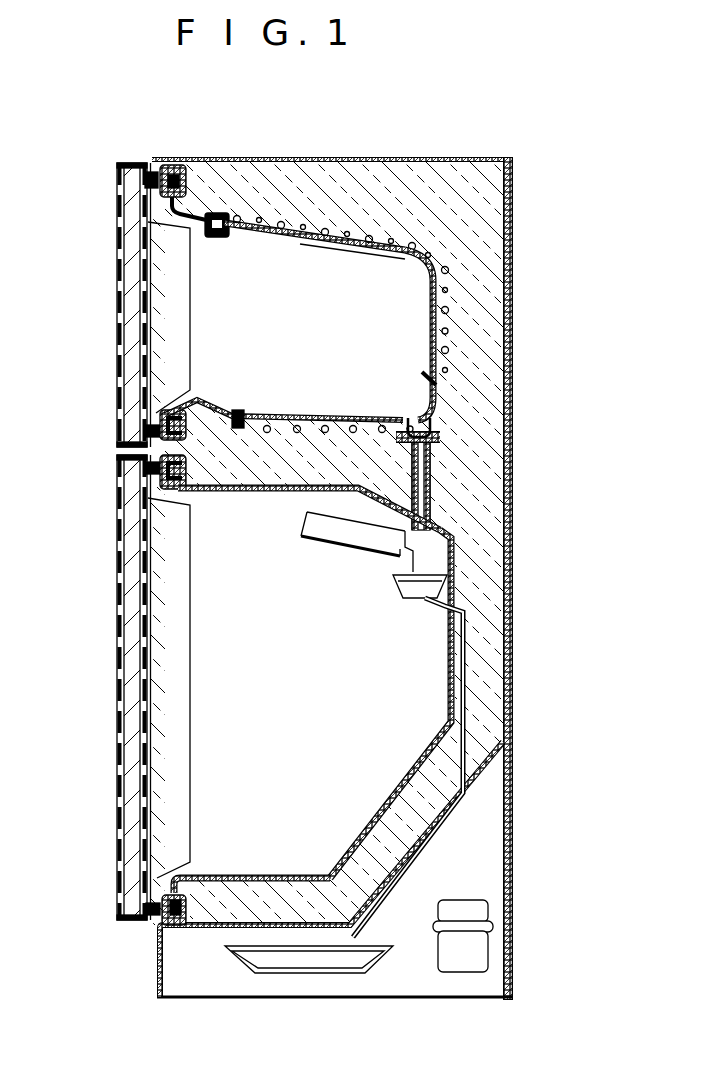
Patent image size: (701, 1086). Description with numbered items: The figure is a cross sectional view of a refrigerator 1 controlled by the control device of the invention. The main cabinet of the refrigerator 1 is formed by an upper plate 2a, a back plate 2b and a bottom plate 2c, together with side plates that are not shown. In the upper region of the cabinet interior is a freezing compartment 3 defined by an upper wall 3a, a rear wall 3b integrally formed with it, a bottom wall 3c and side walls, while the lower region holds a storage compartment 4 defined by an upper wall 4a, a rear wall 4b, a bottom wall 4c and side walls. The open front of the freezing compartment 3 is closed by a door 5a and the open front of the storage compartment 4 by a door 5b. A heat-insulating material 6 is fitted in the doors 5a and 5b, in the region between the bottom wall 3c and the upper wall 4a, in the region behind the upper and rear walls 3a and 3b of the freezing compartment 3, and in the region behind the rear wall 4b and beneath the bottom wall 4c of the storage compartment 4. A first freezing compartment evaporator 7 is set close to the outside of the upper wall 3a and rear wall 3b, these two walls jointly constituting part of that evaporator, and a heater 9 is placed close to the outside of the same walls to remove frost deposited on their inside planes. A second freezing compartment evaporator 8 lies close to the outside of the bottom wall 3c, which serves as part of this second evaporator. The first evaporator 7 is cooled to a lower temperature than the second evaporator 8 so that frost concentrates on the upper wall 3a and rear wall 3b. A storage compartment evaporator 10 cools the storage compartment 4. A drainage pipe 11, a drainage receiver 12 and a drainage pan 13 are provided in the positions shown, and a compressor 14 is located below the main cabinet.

The refrigerator 1 is at (327, 556).
The upper plate 2a is at (318, 157).
The back plate 2b is at (512, 350).
The bottom plate 2c is at (194, 930).
The freezing compartment 3 is at (304, 302).
The upper wall 3a is at (328, 254).
The rear wall 3b is at (435, 333).
The bottom wall 3c is at (289, 402).
The storage compartment 4 is at (311, 696).
The upper wall 4a is at (250, 491).
The rear wall 4b is at (447, 692).
The bottom wall 4c is at (272, 876).
The door 5a is at (118, 310).
The door 5b is at (118, 660).
The heat-insulating material 6 is at (130, 247).
The first freezing compartment evaporator 7 is at (352, 250).
The second freezing compartment evaporator 8 is at (358, 418).
The heater 9 is at (396, 253).
The storage compartment evaporator 10 is at (322, 540).
The drainage pipe 11 is at (432, 488).
The drainage receiver 12 is at (406, 580).
The drainage pan 13 is at (305, 987).
The compressor 14 is at (490, 948).